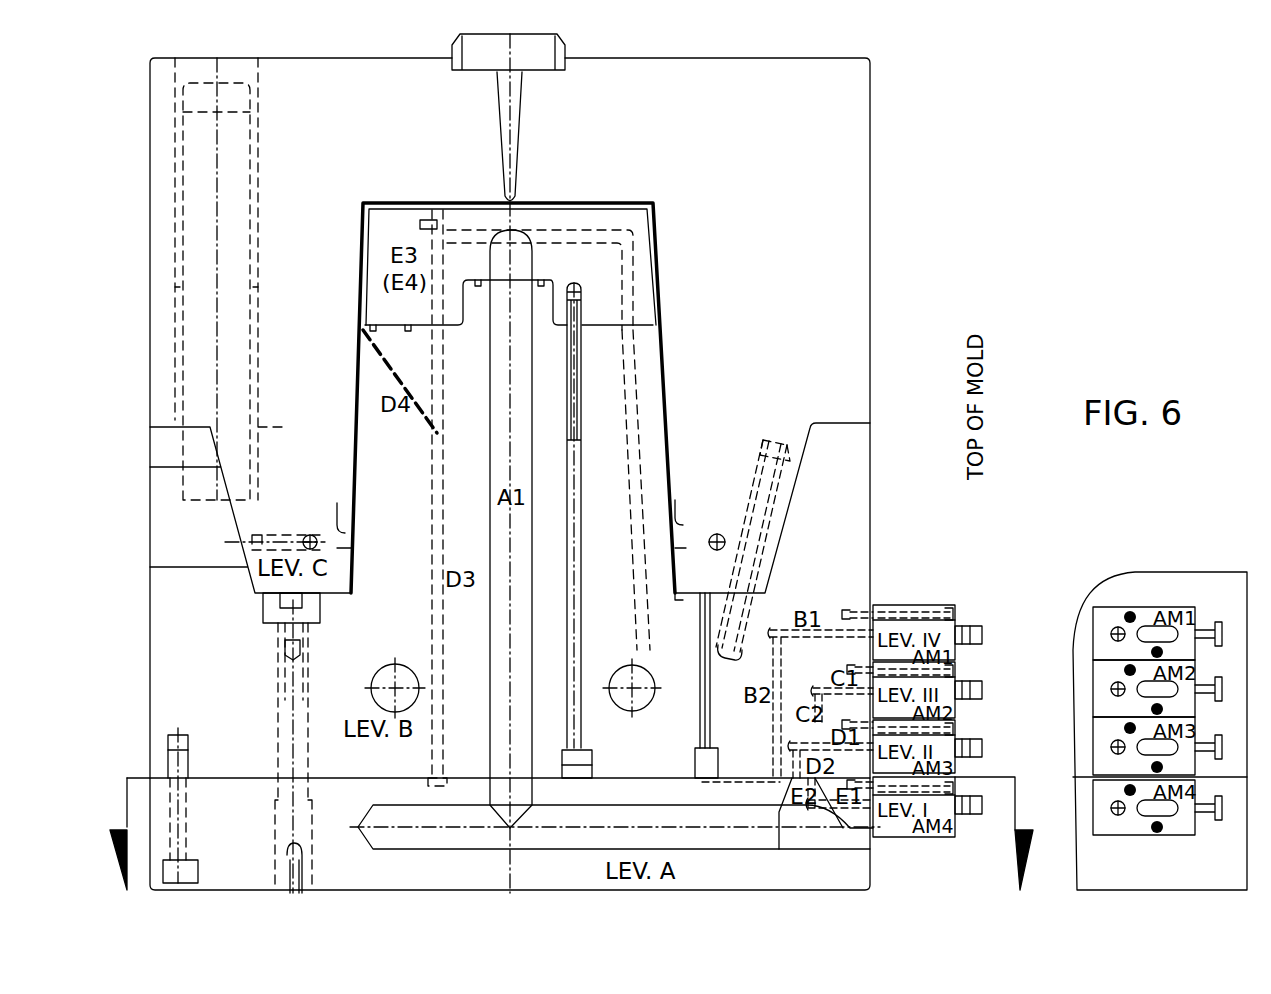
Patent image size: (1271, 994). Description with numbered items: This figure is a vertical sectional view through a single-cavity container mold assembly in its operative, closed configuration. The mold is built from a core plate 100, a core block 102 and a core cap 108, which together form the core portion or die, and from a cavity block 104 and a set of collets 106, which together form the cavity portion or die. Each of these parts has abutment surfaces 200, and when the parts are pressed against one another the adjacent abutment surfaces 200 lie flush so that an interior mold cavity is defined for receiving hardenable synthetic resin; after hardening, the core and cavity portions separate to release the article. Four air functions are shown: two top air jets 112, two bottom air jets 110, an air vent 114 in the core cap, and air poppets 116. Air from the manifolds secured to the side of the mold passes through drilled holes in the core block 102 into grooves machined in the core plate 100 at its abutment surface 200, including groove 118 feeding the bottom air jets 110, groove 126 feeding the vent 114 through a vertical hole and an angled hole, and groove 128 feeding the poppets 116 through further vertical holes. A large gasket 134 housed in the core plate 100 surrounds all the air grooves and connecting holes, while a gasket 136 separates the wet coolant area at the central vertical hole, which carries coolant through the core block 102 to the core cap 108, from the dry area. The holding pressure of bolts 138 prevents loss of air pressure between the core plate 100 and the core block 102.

The core plate 100 is at (853, 867).
The core block 102 is at (845, 552).
The cavity block 104 is at (832, 307).
The collets 106 is at (713, 517).
The core cap 108 is at (643, 235).
The bottom air jets 110 is at (708, 638).
The top air jets 112 is at (994, 588).
The air vent 114 is at (363, 343).
The air poppets 116 is at (420, 222).
The groove 118 is at (722, 778).
The groove 126 is at (780, 893).
The groove 128 is at (843, 778).
The gasket 134 is at (200, 787).
The gasket 136 is at (552, 778).
The bolts 138 is at (168, 753).
The abutment surfaces 200 is at (175, 407).